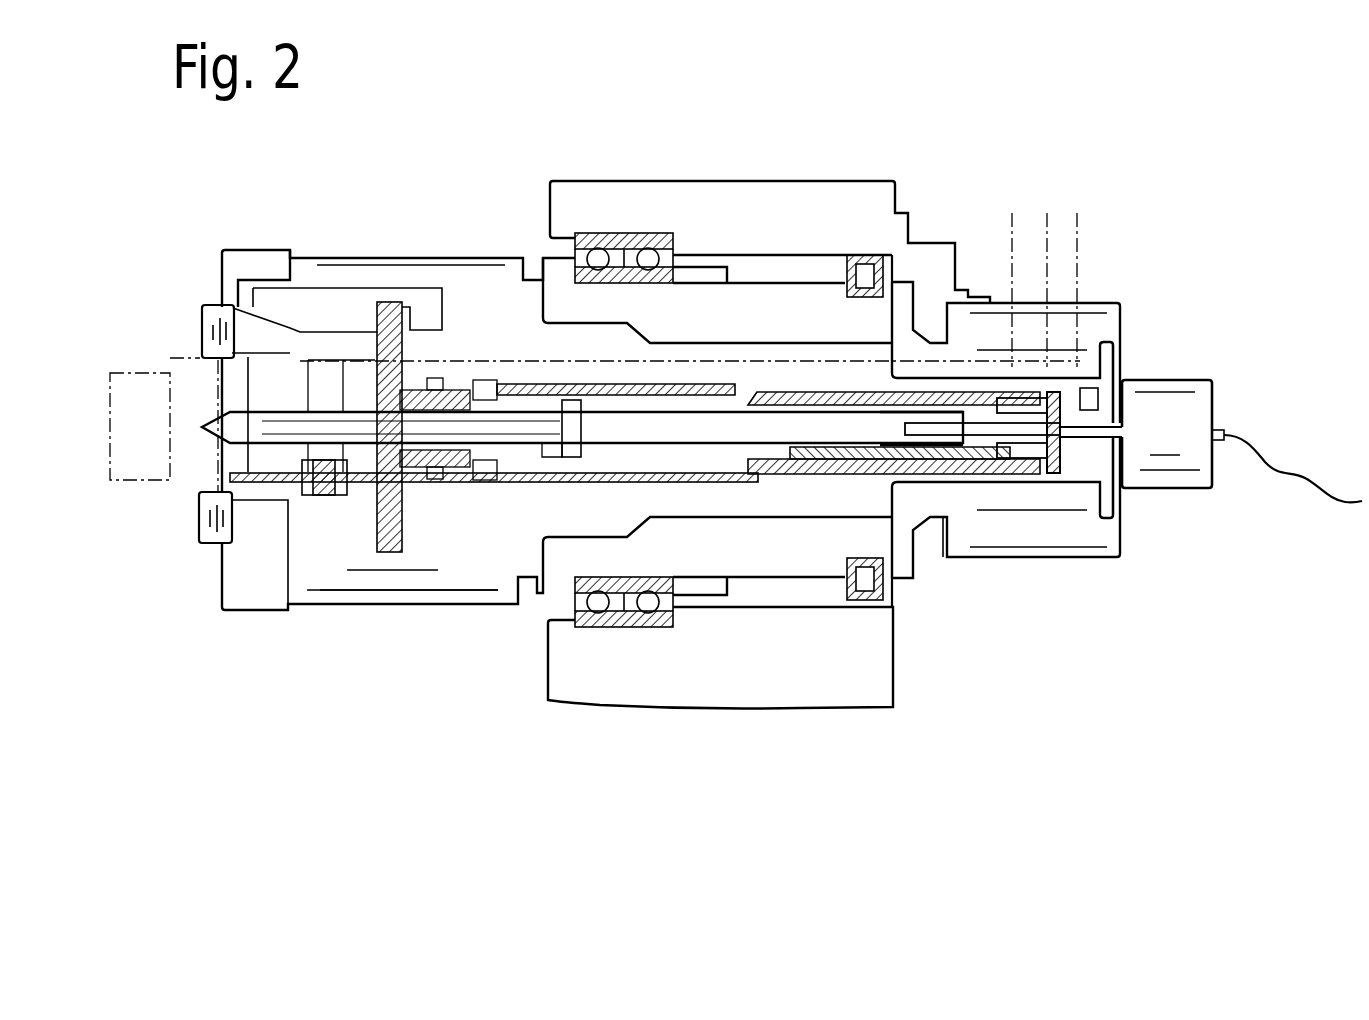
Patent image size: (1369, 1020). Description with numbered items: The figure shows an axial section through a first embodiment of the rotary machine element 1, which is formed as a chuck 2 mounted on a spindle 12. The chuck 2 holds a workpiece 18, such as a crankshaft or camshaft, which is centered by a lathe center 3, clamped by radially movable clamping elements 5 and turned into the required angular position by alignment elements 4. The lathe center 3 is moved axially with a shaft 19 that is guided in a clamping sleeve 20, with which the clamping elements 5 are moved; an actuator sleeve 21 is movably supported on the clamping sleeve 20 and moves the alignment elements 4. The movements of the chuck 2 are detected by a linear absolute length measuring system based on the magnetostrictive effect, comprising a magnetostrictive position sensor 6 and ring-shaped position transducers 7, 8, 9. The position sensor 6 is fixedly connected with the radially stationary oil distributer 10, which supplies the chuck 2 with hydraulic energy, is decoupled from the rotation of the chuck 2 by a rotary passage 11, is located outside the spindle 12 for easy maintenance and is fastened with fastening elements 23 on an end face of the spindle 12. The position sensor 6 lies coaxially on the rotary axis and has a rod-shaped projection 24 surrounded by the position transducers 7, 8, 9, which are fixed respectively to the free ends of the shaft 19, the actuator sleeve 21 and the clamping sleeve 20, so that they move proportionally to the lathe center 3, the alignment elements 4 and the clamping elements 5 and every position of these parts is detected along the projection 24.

The rotary machine element 1 is at (247, 806).
The chuck 2 is at (424, 238).
The lathe center 3 is at (217, 433).
The alignment elements 4 is at (285, 483).
The clamping elements 5 is at (210, 522).
The magnetostrictive position sensor 6 is at (1196, 393).
The position transducer 7 is at (942, 445).
The position transducer 8 is at (1057, 448).
The position transducer 9 is at (1032, 480).
The oil distributer 10 is at (998, 332).
The rotary passage 11 is at (1082, 365).
The spindle 12 is at (733, 168).
The workpiece 18 is at (122, 393).
The shaft 19 is at (793, 452).
The clamping sleeve 20 is at (987, 463).
The actuator sleeve 21 is at (860, 470).
The fastening elements 23 is at (920, 243).
The rod-shaped projection 24 is at (1096, 398).